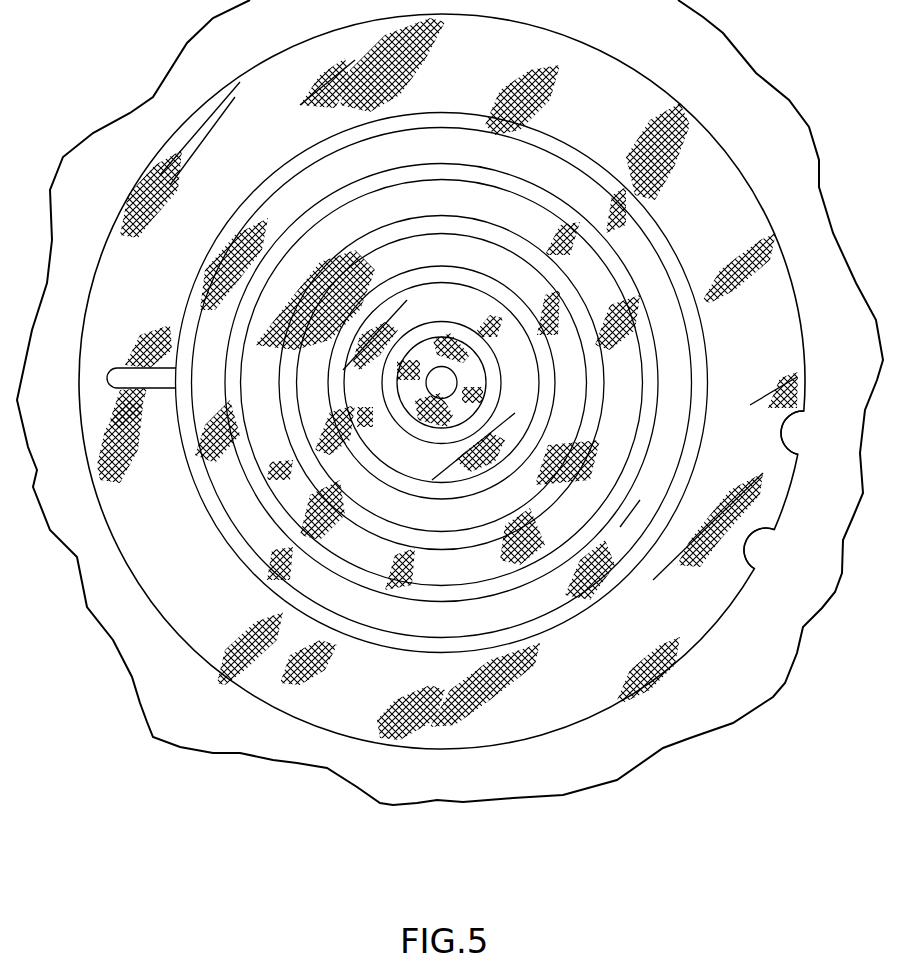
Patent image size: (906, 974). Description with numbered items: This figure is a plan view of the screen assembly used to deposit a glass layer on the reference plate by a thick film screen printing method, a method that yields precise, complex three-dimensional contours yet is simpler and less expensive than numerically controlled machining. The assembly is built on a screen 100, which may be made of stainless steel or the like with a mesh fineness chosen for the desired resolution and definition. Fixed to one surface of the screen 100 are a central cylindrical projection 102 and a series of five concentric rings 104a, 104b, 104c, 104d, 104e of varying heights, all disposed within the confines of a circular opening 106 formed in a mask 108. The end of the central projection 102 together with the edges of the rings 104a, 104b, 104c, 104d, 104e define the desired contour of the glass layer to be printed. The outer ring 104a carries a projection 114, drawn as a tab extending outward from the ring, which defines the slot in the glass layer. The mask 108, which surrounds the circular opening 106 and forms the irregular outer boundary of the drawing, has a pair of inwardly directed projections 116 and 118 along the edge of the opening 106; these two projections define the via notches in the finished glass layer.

The screen 100 is at (645, 635).
The central cylindrical projection 102 is at (431, 371).
The outer ring 104a is at (697, 446).
The concentric ring 104b is at (652, 420).
The concentric ring 104c is at (612, 408).
The concentric ring 104d is at (561, 371).
The concentric ring 104e is at (498, 372).
The circular opening 106 is at (704, 632).
The mask 108 is at (797, 617).
The projection 114 is at (120, 366).
The inwardly directed projection 116 is at (781, 436).
The inwardly directed projection 118 is at (744, 552).